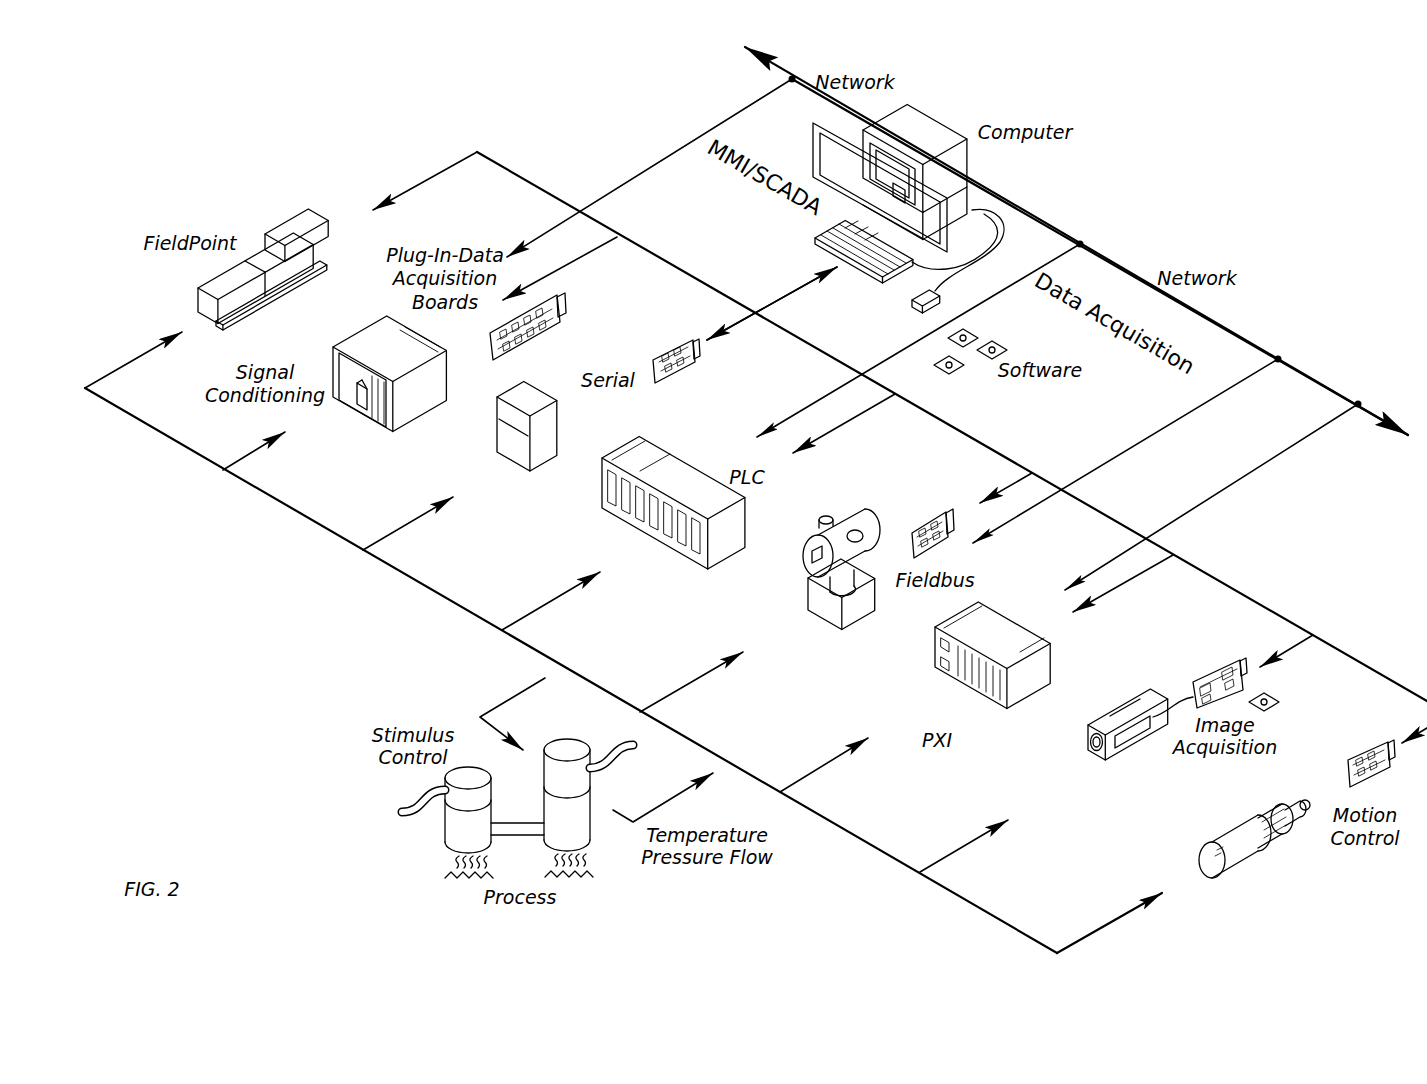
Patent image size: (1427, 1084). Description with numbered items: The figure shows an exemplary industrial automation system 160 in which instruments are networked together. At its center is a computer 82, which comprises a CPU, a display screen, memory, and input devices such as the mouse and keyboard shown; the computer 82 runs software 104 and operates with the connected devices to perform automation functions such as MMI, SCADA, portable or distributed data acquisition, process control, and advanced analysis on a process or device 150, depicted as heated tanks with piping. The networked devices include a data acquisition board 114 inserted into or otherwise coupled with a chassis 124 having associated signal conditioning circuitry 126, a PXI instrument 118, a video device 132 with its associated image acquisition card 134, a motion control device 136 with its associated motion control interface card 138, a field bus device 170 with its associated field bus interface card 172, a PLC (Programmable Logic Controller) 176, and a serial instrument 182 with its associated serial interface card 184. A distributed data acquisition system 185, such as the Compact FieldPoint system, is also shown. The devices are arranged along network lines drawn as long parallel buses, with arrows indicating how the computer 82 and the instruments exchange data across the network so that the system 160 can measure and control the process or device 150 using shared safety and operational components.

The industrial automation system 160 is at (1197, 134).
The computer 82 is at (937, 127).
The software 104 is at (952, 375).
The FieldPoint distributed I/O system 185 is at (285, 227).
The chassis 124 is at (357, 343).
The signal conditioning circuitry 126 is at (360, 410).
The data acquisition board 114 is at (535, 337).
The serial interface card 184 is at (670, 347).
The serial instrument 182 is at (513, 463).
The PLC (Programmable Logic Controller) 176 is at (685, 470).
The field bus interface card 172 is at (928, 513).
The field bus device 170 is at (820, 620).
The PXI instrument 118 is at (975, 700).
The video device 132 is at (1095, 755).
The image acquisition card 134 is at (1210, 673).
The motion control interface card 138 is at (1373, 783).
The motion control device 136 is at (1248, 867).
The process or device 150 is at (412, 807).